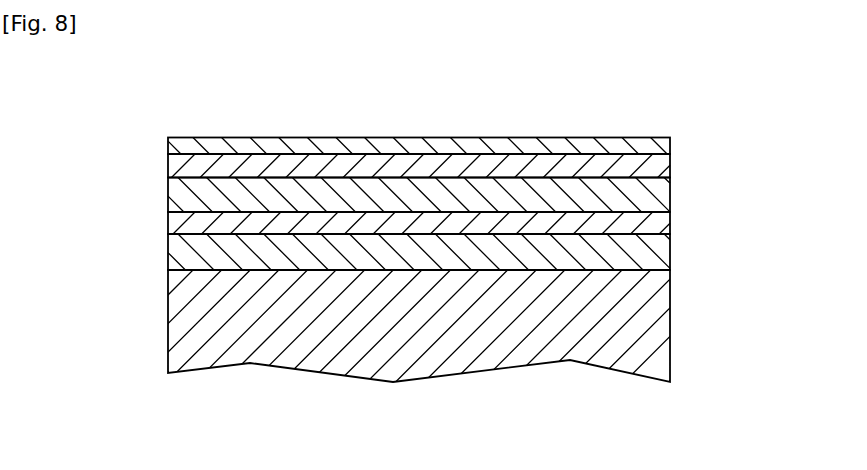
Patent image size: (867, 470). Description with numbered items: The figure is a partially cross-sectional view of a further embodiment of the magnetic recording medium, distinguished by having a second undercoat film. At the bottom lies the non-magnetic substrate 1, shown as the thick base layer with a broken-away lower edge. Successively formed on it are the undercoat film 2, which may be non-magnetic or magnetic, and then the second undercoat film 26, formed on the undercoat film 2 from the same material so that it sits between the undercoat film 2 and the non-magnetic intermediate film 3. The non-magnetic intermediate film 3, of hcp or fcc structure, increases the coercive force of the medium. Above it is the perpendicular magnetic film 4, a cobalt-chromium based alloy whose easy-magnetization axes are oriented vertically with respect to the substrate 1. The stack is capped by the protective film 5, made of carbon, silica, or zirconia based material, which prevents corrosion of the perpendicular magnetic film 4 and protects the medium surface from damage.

The non-magnetic substrate 1 is at (670, 292).
The undercoat film 2 is at (668, 242).
The second undercoat film 26 is at (668, 220).
The non-magnetic intermediate film 3 is at (668, 186).
The perpendicular magnetic film 4 is at (668, 163).
The protective film 5 is at (668, 143).